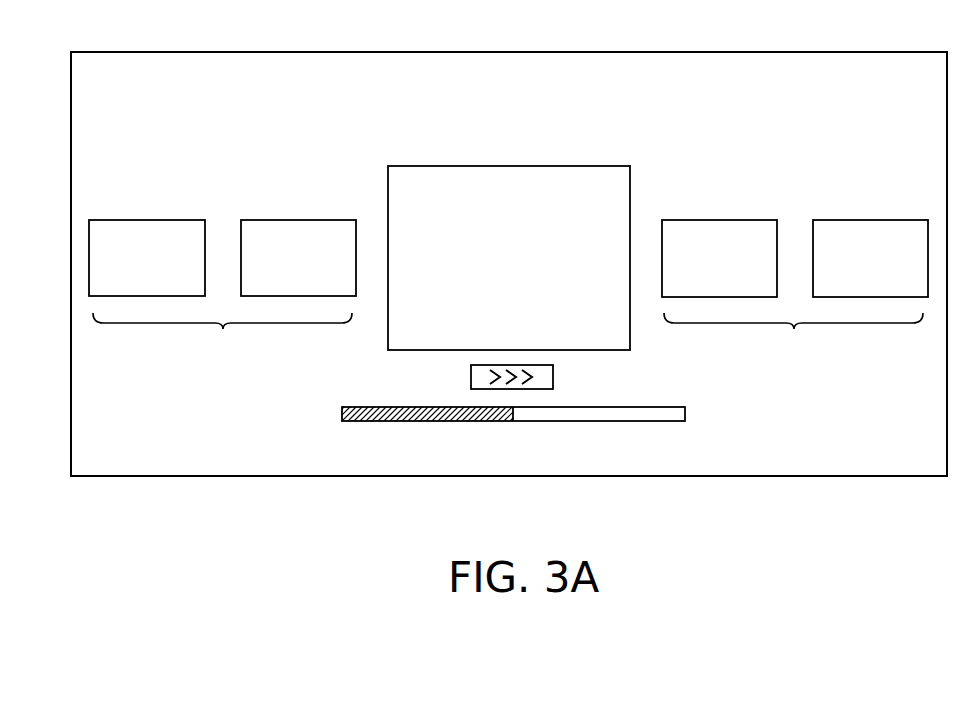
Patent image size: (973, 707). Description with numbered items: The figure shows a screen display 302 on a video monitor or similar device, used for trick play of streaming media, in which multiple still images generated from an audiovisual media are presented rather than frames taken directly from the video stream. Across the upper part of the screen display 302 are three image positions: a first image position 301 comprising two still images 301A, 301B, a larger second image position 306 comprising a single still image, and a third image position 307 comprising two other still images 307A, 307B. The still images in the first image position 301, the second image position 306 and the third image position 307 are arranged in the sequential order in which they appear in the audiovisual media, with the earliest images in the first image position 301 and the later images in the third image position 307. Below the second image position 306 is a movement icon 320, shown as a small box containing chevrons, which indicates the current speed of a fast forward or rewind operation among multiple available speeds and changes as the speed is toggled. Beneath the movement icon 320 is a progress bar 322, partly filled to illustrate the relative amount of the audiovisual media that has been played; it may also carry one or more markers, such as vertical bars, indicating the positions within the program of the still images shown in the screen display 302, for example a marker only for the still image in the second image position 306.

The screen display 302 is at (92, 52).
The first image position 301 is at (222, 335).
The still image 301A is at (147, 220).
The still image 301B is at (297, 220).
The second image position 306 is at (510, 166).
The third image position 307 is at (793, 335).
The still image 307A is at (733, 220).
The still image 307B is at (872, 220).
The movement icon 320 is at (553, 377).
The progress bar 322 is at (513, 421).